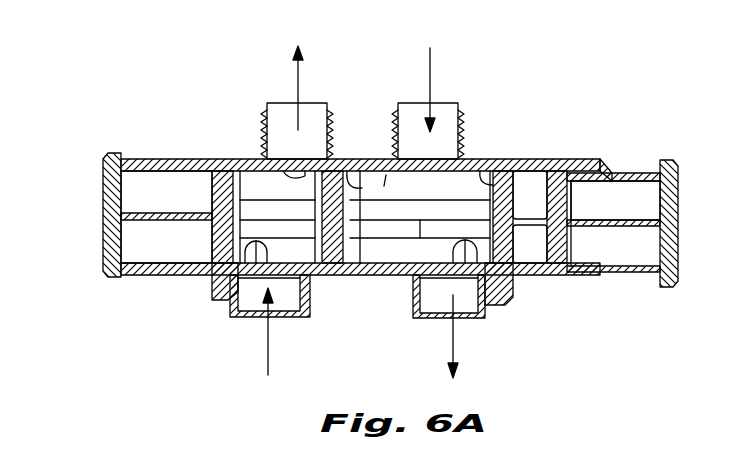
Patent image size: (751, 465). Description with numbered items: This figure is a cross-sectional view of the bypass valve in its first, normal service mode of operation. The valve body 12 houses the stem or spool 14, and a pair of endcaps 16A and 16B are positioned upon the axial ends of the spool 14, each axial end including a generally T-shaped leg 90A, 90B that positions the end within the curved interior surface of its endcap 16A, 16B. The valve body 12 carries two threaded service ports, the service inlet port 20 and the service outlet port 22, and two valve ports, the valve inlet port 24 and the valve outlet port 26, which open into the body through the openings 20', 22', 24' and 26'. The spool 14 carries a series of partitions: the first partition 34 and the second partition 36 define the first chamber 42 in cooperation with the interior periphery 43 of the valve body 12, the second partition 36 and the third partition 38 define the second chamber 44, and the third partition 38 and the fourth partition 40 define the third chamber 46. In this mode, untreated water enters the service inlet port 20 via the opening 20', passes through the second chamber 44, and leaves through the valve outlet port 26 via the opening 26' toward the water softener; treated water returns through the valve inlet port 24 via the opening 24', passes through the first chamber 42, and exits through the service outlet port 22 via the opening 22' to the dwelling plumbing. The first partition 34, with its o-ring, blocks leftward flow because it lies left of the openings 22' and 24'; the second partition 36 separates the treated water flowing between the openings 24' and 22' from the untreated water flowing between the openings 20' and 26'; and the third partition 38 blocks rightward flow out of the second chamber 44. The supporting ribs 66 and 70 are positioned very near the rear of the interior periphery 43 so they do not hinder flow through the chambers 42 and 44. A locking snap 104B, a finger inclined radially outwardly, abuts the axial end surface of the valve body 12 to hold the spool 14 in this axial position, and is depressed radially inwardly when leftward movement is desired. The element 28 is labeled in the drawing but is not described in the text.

The valve body 12 is at (364, 282).
The spool 14 is at (386, 262).
The endcap 16A is at (110, 278).
The endcap 16B is at (676, 238).
The service inlet port 20 is at (451, 103).
The opening 20' is at (481, 140).
The service outlet port 22 is at (279, 102).
The opening 22' is at (258, 138).
The valve inlet port 24 is at (257, 313).
The opening 24' is at (229, 309).
The valve outlet port 26 is at (472, 320).
The opening 26' is at (477, 344).
The mounting block 28 is at (215, 282).
The first partition 34 is at (205, 168).
The second partition 36 is at (318, 276).
The third partition 38 is at (492, 186).
The fourth partition 40 is at (575, 243).
The first chamber 42 is at (262, 175).
The interior periphery 43 is at (380, 185).
The second chamber 44 is at (378, 160).
The third chamber 46 is at (536, 212).
The supporting rib 66 is at (293, 226).
The supporting rib 70 is at (398, 276).
The T-shaped leg 90A is at (150, 212).
The T-shaped leg 90B is at (648, 218).
The locking snap 104B is at (606, 165).